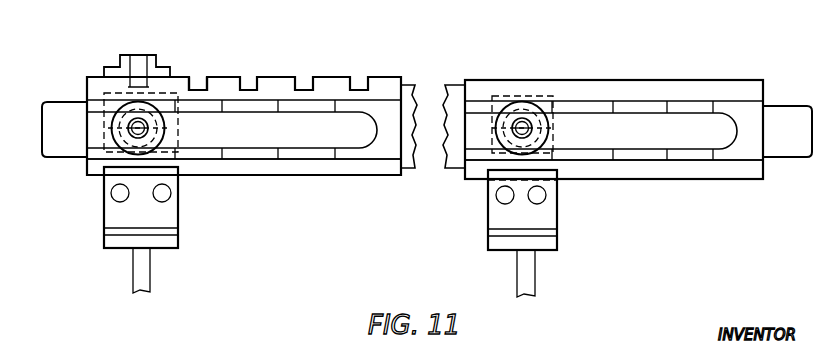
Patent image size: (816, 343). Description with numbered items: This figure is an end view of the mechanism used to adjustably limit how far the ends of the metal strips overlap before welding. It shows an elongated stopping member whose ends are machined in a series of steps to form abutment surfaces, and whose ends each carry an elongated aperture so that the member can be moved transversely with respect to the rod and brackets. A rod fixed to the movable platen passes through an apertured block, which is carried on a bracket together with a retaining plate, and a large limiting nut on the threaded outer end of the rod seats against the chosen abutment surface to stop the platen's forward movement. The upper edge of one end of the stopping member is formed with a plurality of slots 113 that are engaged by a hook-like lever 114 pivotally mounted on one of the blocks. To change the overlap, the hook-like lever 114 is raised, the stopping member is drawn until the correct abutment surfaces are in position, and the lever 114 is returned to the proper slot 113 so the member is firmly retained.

The slot 113 is at (199, 80).
The hook-like lever 114 is at (137, 63).